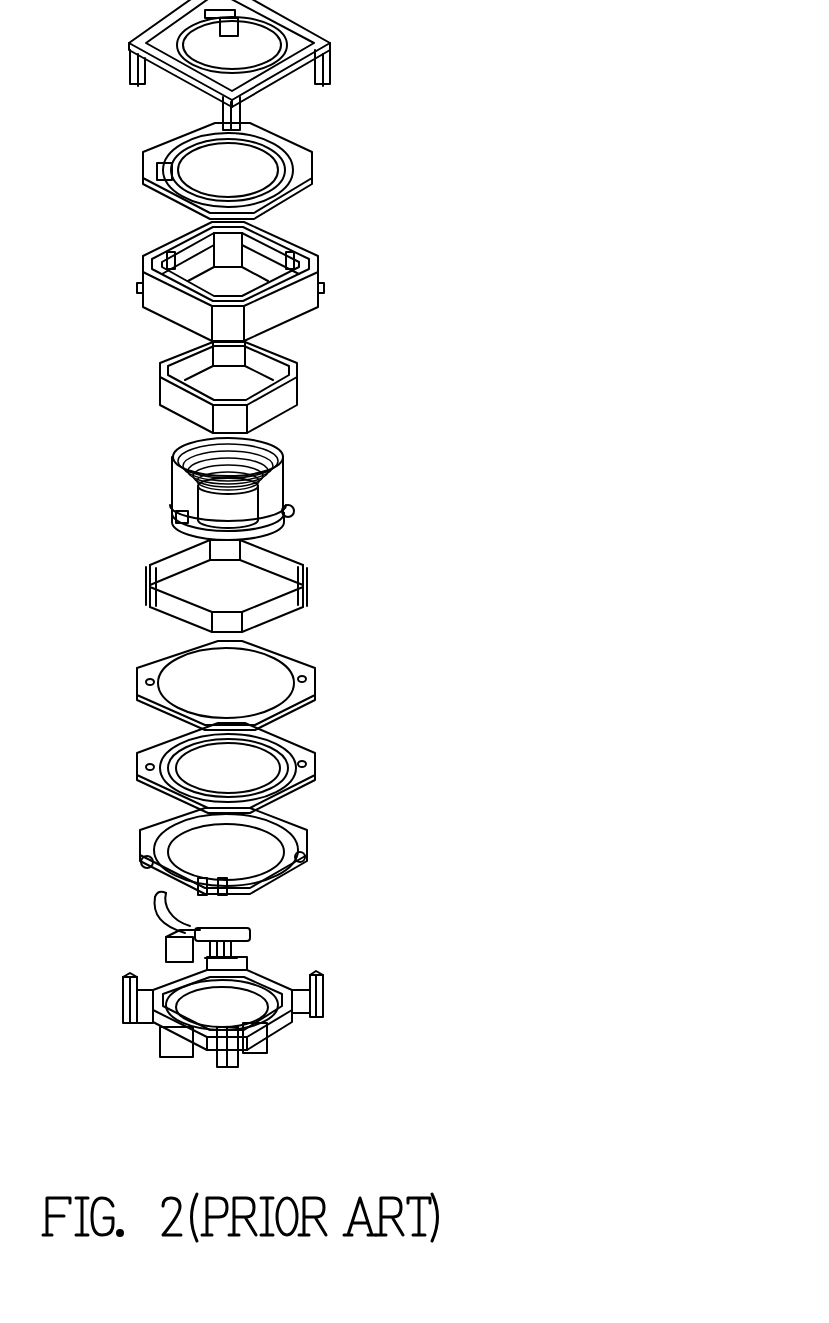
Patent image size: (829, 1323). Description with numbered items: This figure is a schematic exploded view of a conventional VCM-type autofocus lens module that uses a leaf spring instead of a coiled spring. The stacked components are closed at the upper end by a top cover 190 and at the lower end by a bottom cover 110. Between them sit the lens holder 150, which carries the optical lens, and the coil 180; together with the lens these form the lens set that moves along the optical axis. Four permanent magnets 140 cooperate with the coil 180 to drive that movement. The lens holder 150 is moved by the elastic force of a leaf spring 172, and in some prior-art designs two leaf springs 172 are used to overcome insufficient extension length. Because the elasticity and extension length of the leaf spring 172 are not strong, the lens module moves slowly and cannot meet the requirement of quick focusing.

The top cover 190 is at (332, 50).
The leaf spring 172 is at (313, 160).
The coil 180 is at (283, 363).
The lens holder 150 is at (281, 477).
The permanent magnets 140 is at (306, 573).
The bottom cover 110 is at (327, 990).